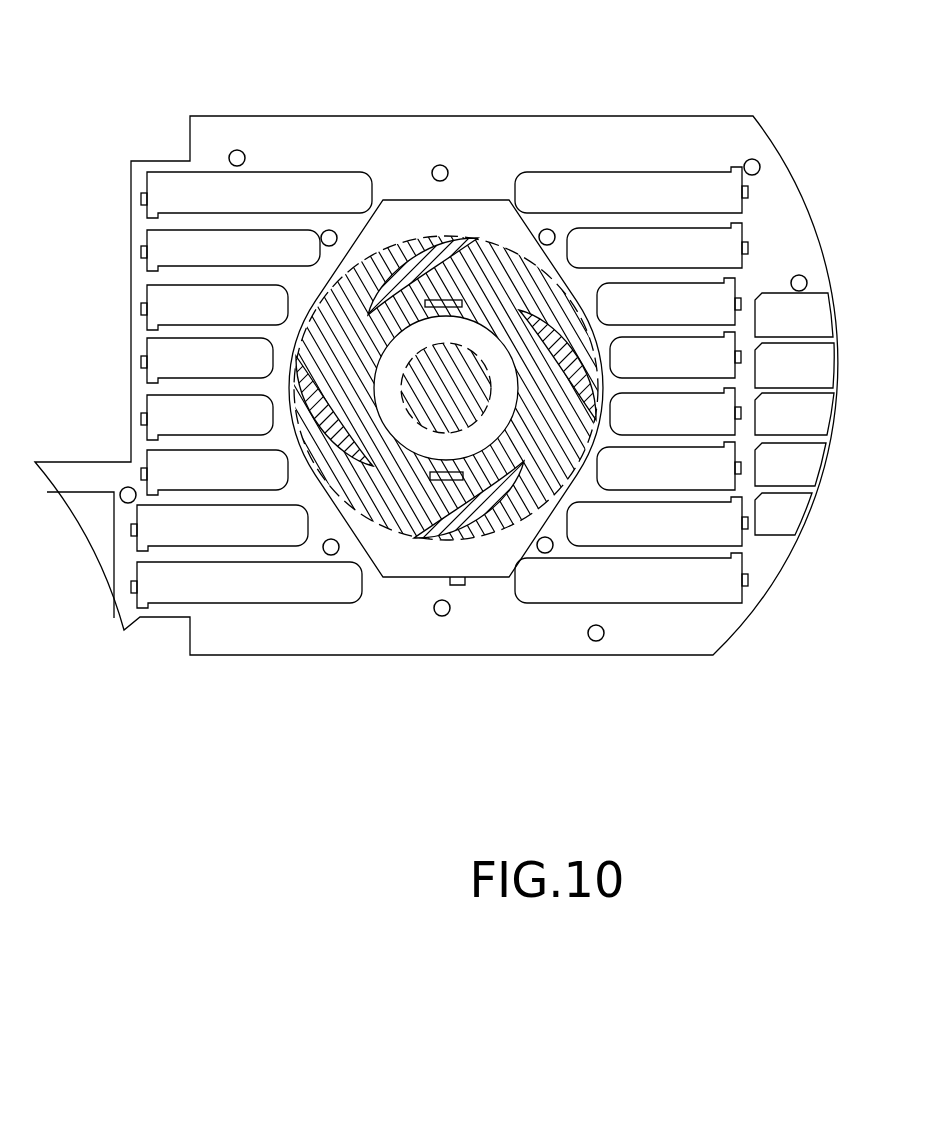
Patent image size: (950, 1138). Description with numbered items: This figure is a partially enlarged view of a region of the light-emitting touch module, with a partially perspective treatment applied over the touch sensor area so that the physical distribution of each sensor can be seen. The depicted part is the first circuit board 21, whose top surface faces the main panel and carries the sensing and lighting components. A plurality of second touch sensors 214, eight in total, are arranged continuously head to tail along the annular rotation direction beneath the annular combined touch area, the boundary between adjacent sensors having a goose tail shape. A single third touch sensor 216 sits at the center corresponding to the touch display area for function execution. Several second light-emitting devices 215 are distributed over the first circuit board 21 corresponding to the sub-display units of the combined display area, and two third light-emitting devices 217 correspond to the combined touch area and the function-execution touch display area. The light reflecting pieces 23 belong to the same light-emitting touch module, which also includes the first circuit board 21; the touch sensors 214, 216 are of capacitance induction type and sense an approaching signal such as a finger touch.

The first circuit board 21 is at (677, 147).
The light reflecting pieces 23 is at (283, 205).
The second touch sensors 214 is at (370, 280).
The second light-emitting devices 215 is at (137, 203).
The third touch sensor 216 is at (417, 390).
The third light-emitting devices 217 is at (443, 480).